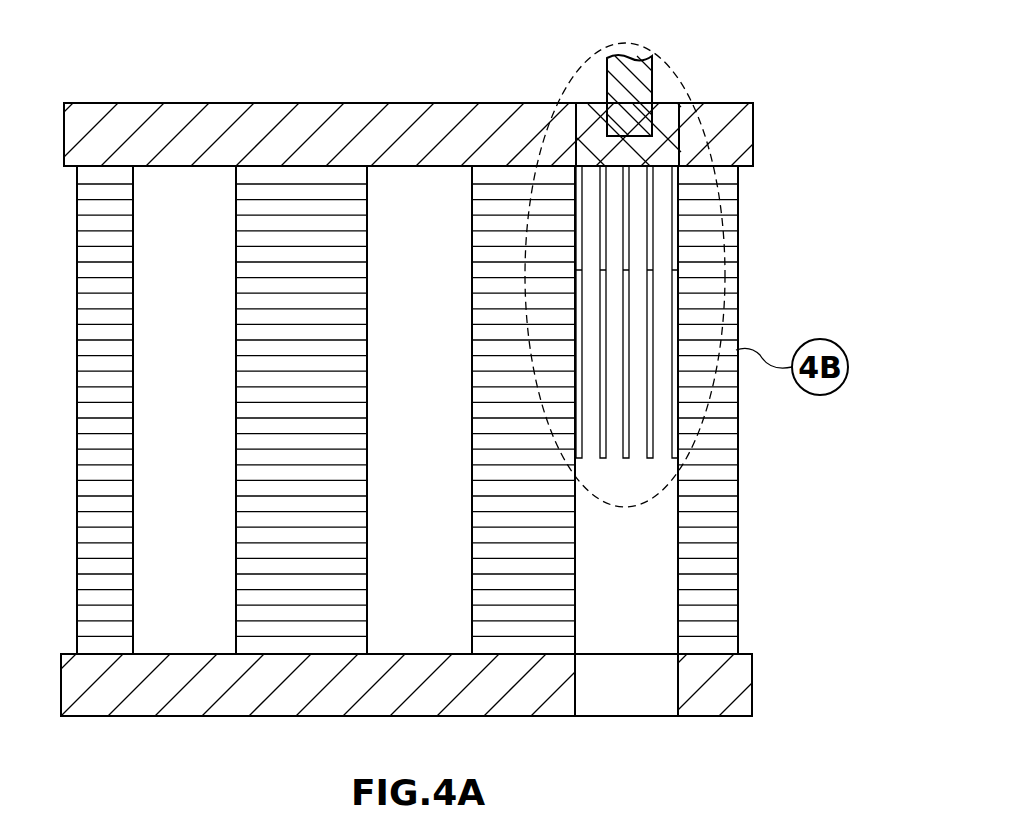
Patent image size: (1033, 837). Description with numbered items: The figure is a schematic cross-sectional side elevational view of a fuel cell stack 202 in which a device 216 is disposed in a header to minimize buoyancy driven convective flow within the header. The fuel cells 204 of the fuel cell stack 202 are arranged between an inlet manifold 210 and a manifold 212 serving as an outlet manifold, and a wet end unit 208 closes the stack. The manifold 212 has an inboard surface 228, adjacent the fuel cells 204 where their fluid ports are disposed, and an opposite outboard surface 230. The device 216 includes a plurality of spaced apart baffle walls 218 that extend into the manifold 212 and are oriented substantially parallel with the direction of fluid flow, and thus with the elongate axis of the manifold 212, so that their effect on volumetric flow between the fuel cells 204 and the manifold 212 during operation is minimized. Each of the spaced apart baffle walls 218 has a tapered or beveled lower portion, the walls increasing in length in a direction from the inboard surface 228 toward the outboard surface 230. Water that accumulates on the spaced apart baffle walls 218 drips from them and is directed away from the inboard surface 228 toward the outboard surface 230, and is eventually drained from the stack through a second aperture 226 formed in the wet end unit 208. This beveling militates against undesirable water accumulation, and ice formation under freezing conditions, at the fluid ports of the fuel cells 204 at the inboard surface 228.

The fuel cell stack 202 is at (108, 72).
The fuel cells 204 is at (236, 505).
The wet end unit 208 is at (505, 717).
The inlet manifold 210 is at (184, 410).
The manifold 212 is at (626, 441).
The device 216 is at (558, 60).
The spaced apart baffle walls 218 is at (650, 458).
The second aperture 226 is at (682, 683).
The inboard surface 228 is at (590, 627).
The outboard surface 230 is at (665, 525).